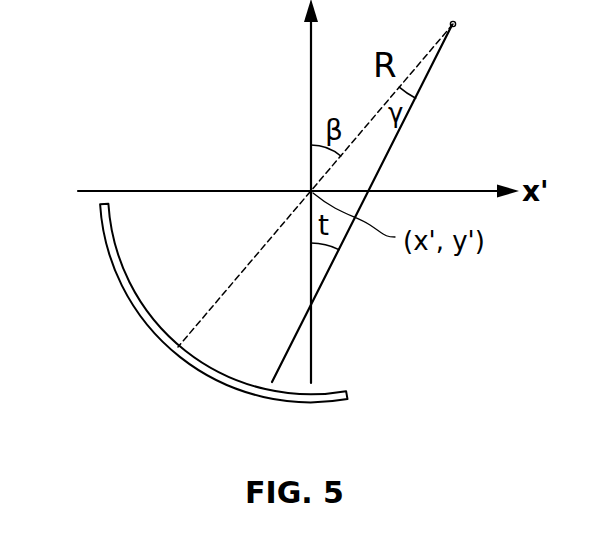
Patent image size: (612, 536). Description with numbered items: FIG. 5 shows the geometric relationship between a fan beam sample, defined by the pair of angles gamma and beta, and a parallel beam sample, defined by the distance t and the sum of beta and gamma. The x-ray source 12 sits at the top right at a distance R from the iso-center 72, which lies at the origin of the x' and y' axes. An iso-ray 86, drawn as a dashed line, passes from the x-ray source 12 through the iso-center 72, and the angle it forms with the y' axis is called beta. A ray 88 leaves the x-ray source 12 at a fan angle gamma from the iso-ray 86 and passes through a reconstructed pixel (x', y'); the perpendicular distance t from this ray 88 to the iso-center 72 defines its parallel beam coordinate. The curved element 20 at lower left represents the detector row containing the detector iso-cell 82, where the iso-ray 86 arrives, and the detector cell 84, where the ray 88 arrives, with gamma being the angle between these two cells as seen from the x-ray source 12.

The x-ray source 12 is at (457, 25).
The curved detector 20 is at (103, 240).
The iso-center 72 is at (309, 189).
The detector iso-cell 82 is at (172, 340).
The detector cell 84 is at (264, 388).
The iso-ray 86 is at (258, 248).
The ray 88 is at (332, 275).